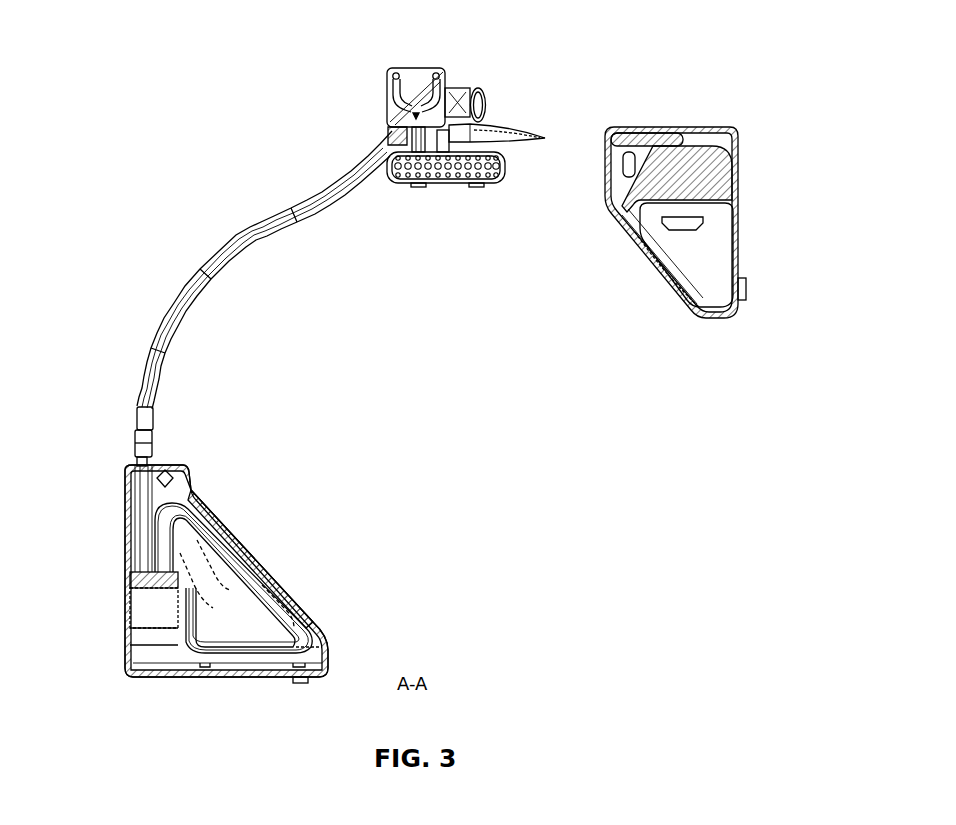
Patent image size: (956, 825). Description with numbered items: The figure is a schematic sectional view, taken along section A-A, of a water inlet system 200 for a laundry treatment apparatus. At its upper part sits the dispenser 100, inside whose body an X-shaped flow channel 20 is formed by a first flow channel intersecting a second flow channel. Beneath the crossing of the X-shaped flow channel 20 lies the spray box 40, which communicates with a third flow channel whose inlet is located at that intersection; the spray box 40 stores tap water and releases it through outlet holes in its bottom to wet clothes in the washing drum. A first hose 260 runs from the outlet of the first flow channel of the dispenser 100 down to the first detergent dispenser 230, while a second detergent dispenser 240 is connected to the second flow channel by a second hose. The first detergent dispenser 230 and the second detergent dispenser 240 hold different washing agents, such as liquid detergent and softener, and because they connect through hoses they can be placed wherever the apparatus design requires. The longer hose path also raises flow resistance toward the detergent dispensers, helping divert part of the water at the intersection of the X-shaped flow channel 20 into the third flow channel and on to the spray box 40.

The X-shaped flow channel 20 is at (395, 68).
The spray box 40 is at (442, 187).
The dispenser 100 is at (368, 97).
The water inlet system 200 is at (192, 147).
The first detergent dispenser 230 is at (155, 608).
The second detergent dispenser 240 is at (733, 190).
The first hose 260 is at (187, 292).